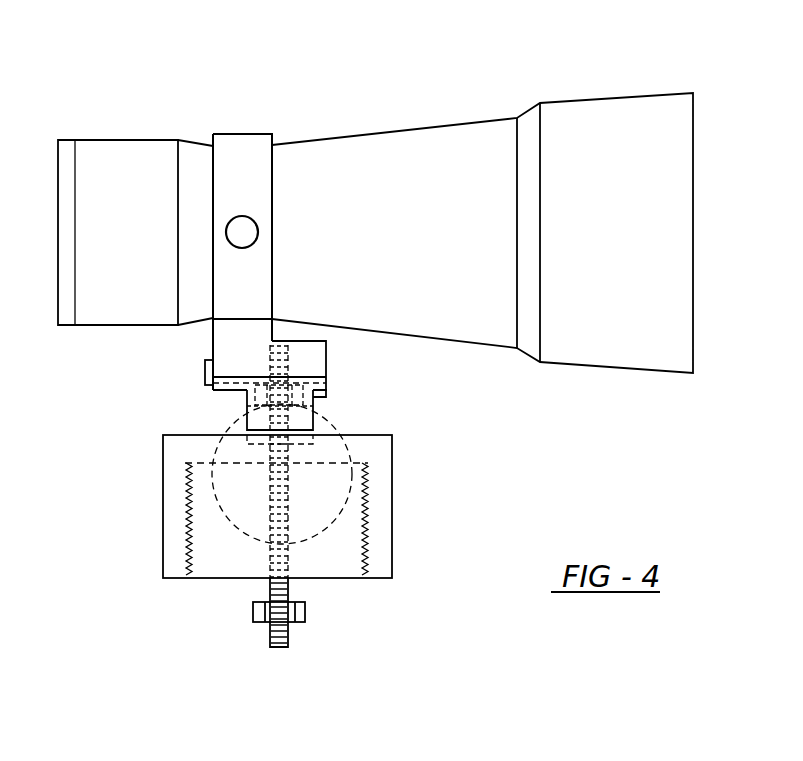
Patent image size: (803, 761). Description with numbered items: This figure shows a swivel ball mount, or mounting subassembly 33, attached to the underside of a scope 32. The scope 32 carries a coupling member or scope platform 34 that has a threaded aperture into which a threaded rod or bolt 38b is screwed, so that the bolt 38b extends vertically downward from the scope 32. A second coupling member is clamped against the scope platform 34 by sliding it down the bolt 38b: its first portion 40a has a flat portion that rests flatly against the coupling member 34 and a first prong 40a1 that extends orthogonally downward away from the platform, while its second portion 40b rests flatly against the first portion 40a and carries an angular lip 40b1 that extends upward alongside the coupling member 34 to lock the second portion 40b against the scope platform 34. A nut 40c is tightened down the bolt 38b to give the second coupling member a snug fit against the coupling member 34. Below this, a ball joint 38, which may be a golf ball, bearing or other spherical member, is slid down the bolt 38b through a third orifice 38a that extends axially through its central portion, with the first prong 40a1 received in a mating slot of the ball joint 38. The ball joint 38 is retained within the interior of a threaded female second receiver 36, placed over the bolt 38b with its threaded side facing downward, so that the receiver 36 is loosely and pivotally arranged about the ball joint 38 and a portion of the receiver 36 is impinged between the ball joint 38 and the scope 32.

The scope 32 is at (466, 55).
The mounting subassembly 33 is at (150, 604).
The coupling member 34 is at (327, 353).
The second receiver 36 is at (392, 500).
The ball joint 38 is at (318, 427).
The third orifice 38a is at (226, 515).
The bolt 38b is at (290, 632).
The first portion 40a is at (240, 390).
The first prong 40a1 is at (250, 406).
The second portion 40b is at (228, 392).
The angular lip 40b1 is at (205, 371).
The nut 40c is at (315, 398).